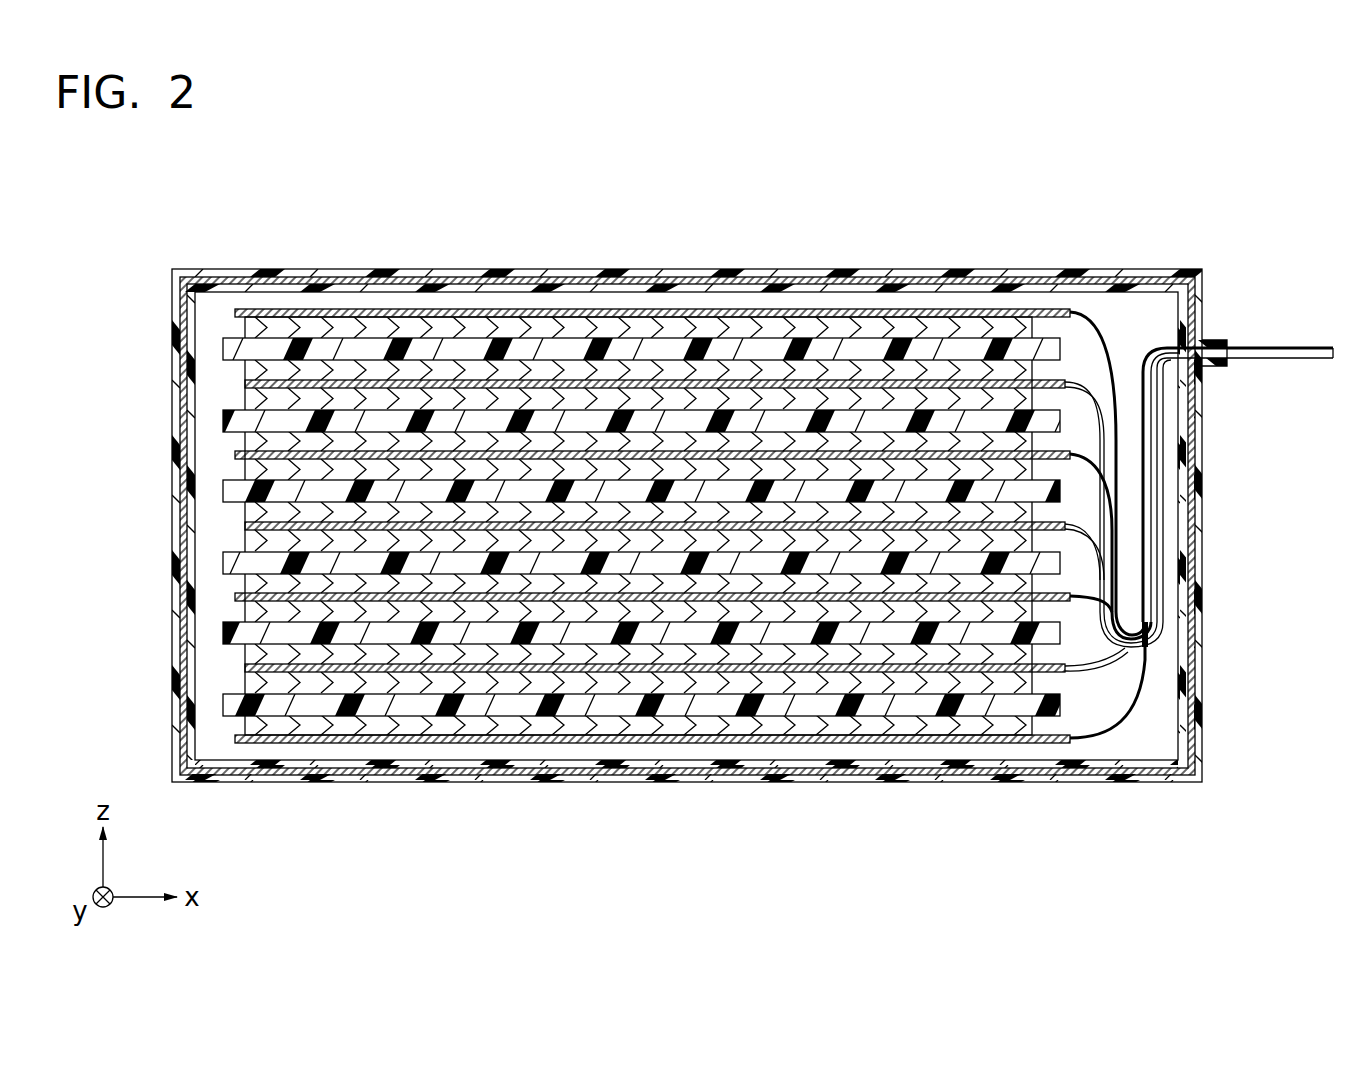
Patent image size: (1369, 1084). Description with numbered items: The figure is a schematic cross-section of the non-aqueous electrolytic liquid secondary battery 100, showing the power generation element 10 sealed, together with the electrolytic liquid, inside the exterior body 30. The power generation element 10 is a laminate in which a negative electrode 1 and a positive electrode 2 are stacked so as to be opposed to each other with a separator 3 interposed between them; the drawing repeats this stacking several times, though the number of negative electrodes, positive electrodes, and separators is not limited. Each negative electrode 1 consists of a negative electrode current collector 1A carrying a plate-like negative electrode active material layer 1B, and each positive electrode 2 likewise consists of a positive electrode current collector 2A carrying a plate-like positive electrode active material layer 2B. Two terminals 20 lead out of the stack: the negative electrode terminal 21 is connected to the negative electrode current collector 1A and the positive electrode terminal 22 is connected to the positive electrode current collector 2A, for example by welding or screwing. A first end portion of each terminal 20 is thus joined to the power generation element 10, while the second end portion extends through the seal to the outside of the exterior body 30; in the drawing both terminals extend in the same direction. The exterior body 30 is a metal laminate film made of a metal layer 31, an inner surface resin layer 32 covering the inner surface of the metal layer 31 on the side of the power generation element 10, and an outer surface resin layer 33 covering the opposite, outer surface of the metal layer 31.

The non-aqueous electrolytic liquid secondary battery 100 is at (678, 391).
The power generation element 10 is at (579, 468).
The negative electrode 1 is at (231, 312).
The negative electrode current collector 1A is at (377, 453).
The negative electrode active material layer 1B is at (338, 440).
The positive electrode 2 is at (241, 384).
The positive electrode current collector 2A is at (512, 382).
The positive electrode active material layer 2B is at (477, 368).
The separator 3 is at (233, 350).
The terminal 20 is at (1205, 525).
The negative electrode terminal 21 is at (1150, 546).
The positive electrode terminal 22 is at (1165, 589).
The exterior body 30 is at (601, 391).
The metal layer 31 is at (578, 283).
The inner surface resin layer 32 is at (637, 290).
The outer surface resin layer 33 is at (683, 272).